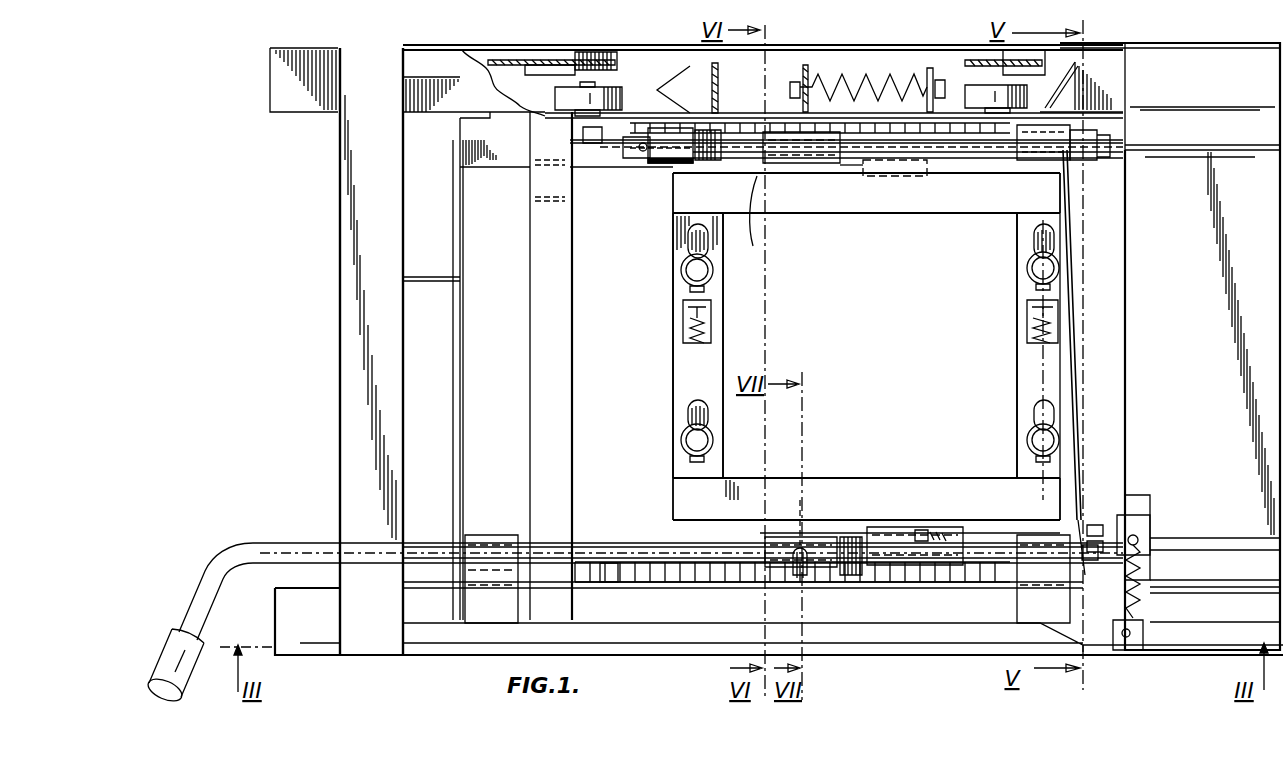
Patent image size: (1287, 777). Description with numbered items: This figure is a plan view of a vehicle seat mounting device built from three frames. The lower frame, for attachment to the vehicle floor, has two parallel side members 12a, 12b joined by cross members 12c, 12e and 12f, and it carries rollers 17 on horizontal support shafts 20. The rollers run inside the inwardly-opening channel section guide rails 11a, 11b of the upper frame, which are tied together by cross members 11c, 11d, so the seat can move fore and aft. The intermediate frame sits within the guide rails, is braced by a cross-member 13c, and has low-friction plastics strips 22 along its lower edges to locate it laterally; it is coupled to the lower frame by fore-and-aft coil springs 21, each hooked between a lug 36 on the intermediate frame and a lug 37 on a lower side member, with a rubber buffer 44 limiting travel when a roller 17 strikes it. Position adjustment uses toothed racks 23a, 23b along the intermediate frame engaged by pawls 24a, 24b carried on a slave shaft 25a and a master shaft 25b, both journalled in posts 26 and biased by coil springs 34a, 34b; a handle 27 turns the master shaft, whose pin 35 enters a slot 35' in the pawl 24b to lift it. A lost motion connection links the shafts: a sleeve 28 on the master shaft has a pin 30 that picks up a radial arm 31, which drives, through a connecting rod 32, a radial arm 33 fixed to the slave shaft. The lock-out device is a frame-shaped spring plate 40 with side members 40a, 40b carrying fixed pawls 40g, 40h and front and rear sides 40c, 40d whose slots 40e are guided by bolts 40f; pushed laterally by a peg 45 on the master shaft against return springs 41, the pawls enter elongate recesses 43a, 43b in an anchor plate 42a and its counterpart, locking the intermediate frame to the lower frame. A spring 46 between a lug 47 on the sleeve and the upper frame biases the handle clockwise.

The guide rail 11a is at (610, 50).
The guide rail 11b is at (412, 657).
The cross member 11c is at (348, 318).
The cross member 11d is at (1142, 292).
The side member 12a is at (503, 152).
The side member 12b is at (592, 530).
The cross member 12c is at (440, 311).
The cross member 12e is at (688, 415).
The cross member 12f is at (1034, 415).
The cross-member 13c is at (545, 369).
The roller 17 is at (555, 98).
The horizontal support shaft 20 is at (598, 84).
The spring 21 is at (858, 74).
The low-friction U section plastics strip 22 is at (555, 60).
The toothed rack 23a is at (592, 150).
The toothed rack 23b is at (612, 572).
The rotatable pawl 24a is at (788, 165).
The rotatable pawl 24b is at (762, 553).
The slave shaft 25a is at (738, 163).
The master shaft 25b is at (286, 547).
The post 26 is at (658, 165).
The handle 27 is at (177, 643).
The sleeve 28 is at (1100, 567).
The pin 30 is at (1102, 540).
The radial arm 31 is at (1083, 552).
The connecting rod 32 is at (1077, 403).
The radial arm 33 is at (1082, 158).
The coil spring 34a is at (710, 137).
The coil spring 34b is at (851, 575).
The pin 35 is at (786, 583).
The slot 35' is at (827, 497).
The lug 36 is at (806, 64).
The lug 37 is at (930, 68).
The spring plate 40 is at (825, 351).
The side member 40a is at (947, 203).
The side member 40b is at (768, 498).
The front side 40c is at (683, 377).
The rear side 40d is at (1036, 360).
The slot 40e is at (684, 242).
The bolt 40f is at (681, 440).
The fixed pawl 40g is at (828, 170).
The fixed pawl 40h is at (834, 530).
The return spring 41 is at (711, 325).
The anchor plate 42a is at (752, 223).
The elongate recess 43a is at (857, 167).
The elongate recess 43b is at (857, 527).
The rubber buffer 44 is at (693, 76).
The peg 45 is at (925, 535).
The spring 46 is at (1142, 565).
The lug 47 is at (1150, 520).